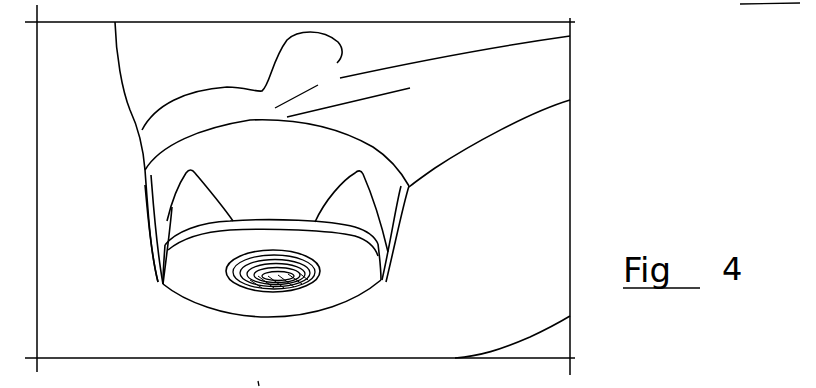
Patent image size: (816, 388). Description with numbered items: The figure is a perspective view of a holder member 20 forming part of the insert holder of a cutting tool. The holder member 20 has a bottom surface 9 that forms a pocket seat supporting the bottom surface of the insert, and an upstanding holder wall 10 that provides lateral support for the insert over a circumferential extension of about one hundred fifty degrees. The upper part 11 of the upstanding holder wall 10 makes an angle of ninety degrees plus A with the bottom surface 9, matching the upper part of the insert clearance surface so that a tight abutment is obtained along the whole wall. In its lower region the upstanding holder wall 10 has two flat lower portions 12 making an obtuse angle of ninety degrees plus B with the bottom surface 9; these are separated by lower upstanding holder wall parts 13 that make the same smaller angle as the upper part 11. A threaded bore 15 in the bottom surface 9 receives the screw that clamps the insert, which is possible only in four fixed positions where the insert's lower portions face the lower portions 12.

The bottom surface 9 is at (353, 288).
The upstanding holder wall 10 is at (387, 200).
The upper part of the upstanding holder wall 11 is at (355, 137).
The flat lower portions 12 is at (183, 210).
The lower upstanding holder wall parts 13 is at (258, 210).
The threaded bore 15 is at (240, 272).
The holder member 20 is at (131, 178).